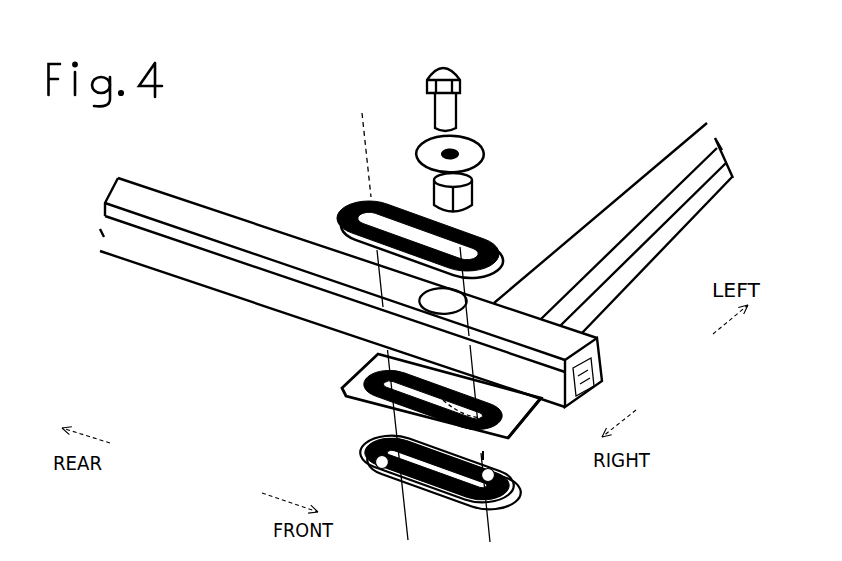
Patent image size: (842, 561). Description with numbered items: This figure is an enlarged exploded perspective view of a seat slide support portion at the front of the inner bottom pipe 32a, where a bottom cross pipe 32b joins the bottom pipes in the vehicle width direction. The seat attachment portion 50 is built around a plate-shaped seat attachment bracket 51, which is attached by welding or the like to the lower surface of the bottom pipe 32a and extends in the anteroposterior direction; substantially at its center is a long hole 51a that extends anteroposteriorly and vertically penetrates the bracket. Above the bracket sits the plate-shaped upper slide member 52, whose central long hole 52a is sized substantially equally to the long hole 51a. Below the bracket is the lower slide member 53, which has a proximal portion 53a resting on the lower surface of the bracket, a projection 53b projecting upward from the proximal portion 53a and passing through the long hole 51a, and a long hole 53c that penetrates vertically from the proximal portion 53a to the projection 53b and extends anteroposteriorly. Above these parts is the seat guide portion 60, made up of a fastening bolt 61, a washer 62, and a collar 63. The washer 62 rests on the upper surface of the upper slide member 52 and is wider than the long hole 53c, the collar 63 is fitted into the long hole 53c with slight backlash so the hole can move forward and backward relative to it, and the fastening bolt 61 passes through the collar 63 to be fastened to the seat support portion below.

The bottom pipe 32a is at (156, 199).
The bottom cross pipe 32b is at (642, 253).
The seat attachment portion 50 is at (413, 355).
The seat attachment bracket 51 is at (440, 397).
The long hole 51a is at (540, 417).
The upper slide member 52 is at (418, 273).
The long hole 52a is at (498, 242).
The lower slide member 53 is at (432, 450).
The proximal portion 53a is at (387, 492).
The projection 53b is at (376, 464).
The long hole 53c is at (483, 453).
The seat guide portion 60 is at (504, 133).
The fastening bolt 61 is at (458, 93).
The washer 62 is at (480, 140).
The collar 63 is at (496, 171).